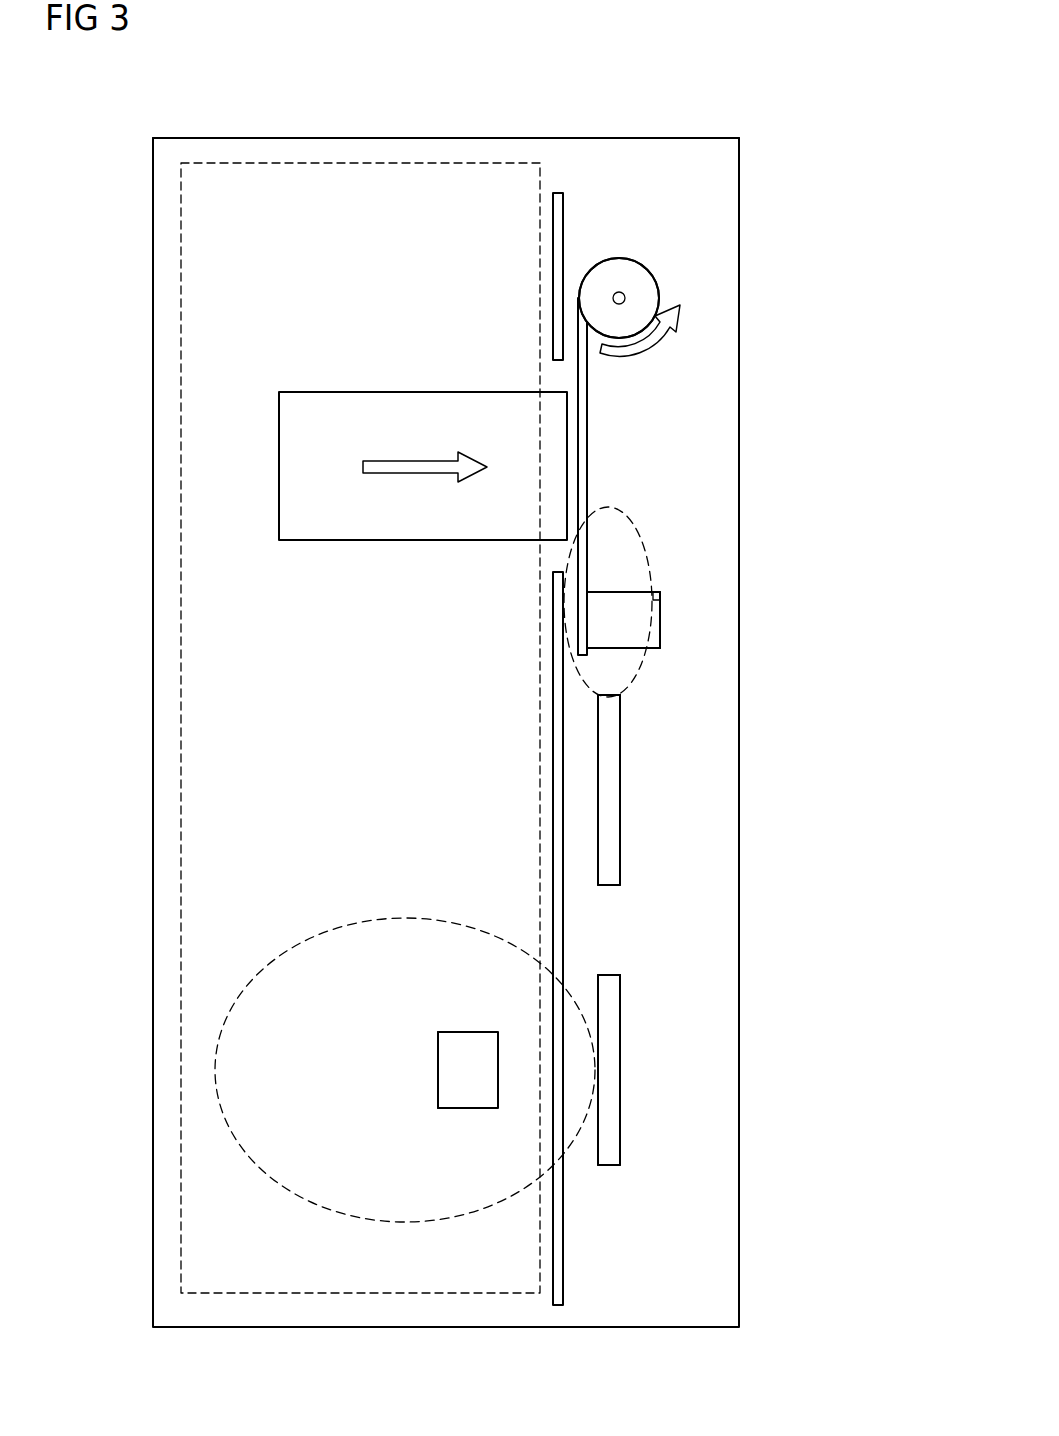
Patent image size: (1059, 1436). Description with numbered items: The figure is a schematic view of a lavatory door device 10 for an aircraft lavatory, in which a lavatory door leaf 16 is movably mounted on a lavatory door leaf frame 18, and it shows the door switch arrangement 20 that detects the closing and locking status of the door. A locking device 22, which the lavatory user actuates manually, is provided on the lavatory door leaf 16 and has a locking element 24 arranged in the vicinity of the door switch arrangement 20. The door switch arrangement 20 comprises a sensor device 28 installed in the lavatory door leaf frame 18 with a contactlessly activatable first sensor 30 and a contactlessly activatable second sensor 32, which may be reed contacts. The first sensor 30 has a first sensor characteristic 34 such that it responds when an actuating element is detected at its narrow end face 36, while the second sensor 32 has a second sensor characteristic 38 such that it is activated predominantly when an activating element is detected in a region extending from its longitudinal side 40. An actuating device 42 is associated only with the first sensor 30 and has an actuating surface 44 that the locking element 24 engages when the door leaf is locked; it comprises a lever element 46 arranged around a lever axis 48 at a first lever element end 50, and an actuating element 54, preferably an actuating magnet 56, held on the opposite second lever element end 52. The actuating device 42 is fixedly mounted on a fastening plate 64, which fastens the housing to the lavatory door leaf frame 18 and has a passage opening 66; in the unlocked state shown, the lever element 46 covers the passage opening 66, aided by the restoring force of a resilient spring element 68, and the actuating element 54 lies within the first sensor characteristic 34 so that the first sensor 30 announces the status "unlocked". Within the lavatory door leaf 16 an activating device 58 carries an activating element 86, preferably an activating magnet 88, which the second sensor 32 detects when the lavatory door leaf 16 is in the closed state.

The lavatory door device 10 is at (185, 118).
The lavatory door leaf 16 is at (297, 163).
The lavatory door leaf frame 18 is at (388, 152).
The door switch arrangement 20 is at (490, 105).
The locking device 22 is at (278, 356).
The locking element 24 is at (350, 405).
The sensor device 28 is at (680, 830).
The first sensor 30 is at (610, 770).
The second sensor 32 is at (610, 1060).
The first sensor characteristic 34 is at (632, 512).
The narrow end face 36 is at (618, 693).
The second sensor characteristic 38 is at (295, 1198).
The longitudinal side 40 is at (598, 985).
The actuating device 42 is at (680, 220).
The actuating surface 44 is at (576, 440).
The lever element 46 is at (588, 462).
The lever axis 48 is at (625, 295).
The first lever element end 50 is at (612, 238).
The second lever element end 52 is at (700, 620).
The actuating element 54 is at (657, 597).
The actuating magnet 56 is at (660, 638).
The activating device 58 is at (442, 1010).
The fastening plate 64 is at (557, 242).
The passage opening 66 is at (560, 370).
The resilient spring element 68 is at (662, 300).
The activating element 86 is at (447, 1050).
The activating magnet 88 is at (447, 1092).